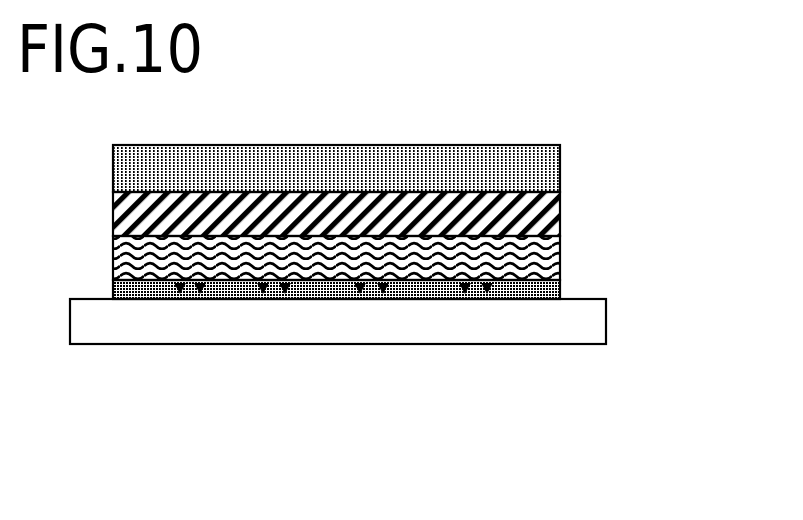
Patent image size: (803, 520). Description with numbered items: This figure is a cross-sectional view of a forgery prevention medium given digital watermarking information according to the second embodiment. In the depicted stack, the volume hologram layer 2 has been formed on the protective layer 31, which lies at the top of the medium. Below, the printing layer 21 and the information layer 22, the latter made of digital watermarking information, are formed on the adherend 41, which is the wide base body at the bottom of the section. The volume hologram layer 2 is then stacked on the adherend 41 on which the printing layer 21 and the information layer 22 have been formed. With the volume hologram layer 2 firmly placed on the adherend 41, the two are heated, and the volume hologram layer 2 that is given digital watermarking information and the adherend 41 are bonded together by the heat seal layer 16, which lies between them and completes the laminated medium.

The protective layer 31 is at (543, 172).
The volume hologram layer 2 is at (545, 210).
The heat seal layer 16 is at (545, 255).
The printing layer 21 is at (550, 290).
The adherend 41 is at (560, 319).
The information layer 22 is at (492, 294).